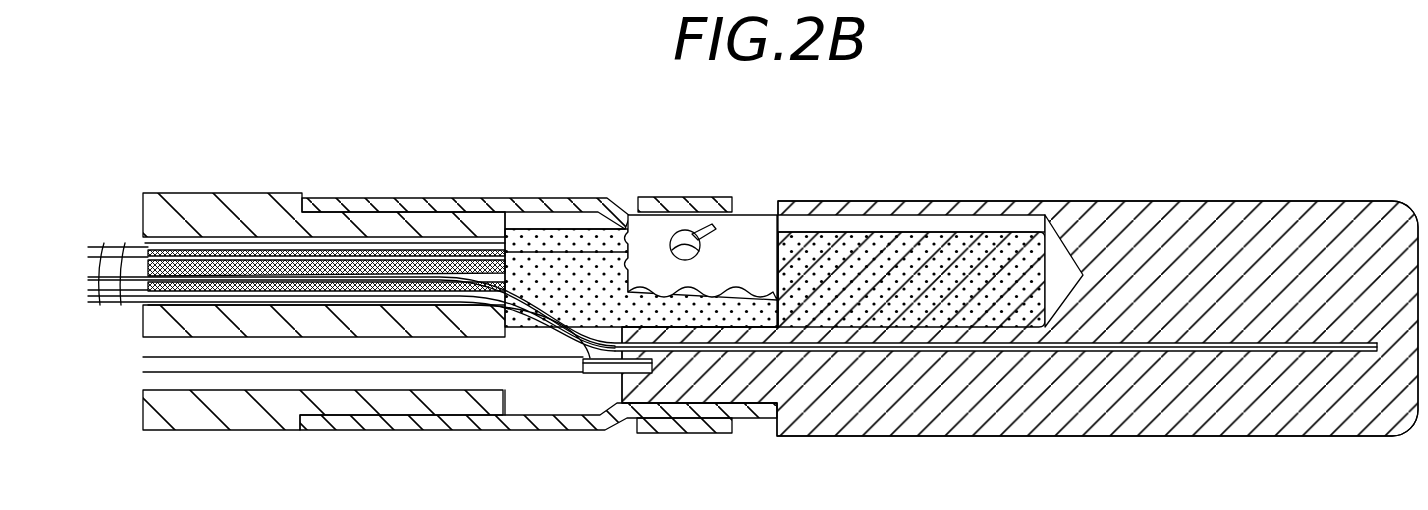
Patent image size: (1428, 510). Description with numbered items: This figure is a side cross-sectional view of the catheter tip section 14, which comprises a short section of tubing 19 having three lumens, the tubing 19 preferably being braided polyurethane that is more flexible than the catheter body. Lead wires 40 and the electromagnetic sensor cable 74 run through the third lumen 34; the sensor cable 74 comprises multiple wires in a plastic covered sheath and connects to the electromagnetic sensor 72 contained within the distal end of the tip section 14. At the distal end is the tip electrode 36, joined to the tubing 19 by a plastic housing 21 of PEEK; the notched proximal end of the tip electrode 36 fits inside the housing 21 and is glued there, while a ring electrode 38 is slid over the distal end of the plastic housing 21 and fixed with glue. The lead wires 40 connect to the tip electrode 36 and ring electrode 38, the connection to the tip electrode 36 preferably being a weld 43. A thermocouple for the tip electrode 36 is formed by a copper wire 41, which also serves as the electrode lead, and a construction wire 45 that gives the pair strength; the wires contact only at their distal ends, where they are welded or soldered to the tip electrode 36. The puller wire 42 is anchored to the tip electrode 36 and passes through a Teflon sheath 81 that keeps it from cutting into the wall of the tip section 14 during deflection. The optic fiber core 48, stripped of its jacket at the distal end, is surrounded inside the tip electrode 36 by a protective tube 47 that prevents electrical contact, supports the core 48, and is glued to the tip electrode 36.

The tip section 14 is at (1033, 178).
The tubing 19 is at (192, 205).
The plastic housing 21 is at (513, 205).
The third lumen 34 is at (183, 243).
The tip electrode 36 is at (985, 205).
The ring electrode 38 is at (655, 208).
The lead wires 40 is at (125, 248).
The copper wire 41 is at (140, 281).
The puller wire 42 is at (600, 368).
The weld 43 is at (612, 382).
The construction wire 45 is at (142, 298).
The protective tube 47 is at (945, 388).
The core 48 is at (1102, 375).
The electromagnetic sensor 72 is at (852, 268).
The electromagnetic sensor cable 74 is at (372, 265).
The sheath 81 is at (143, 372).